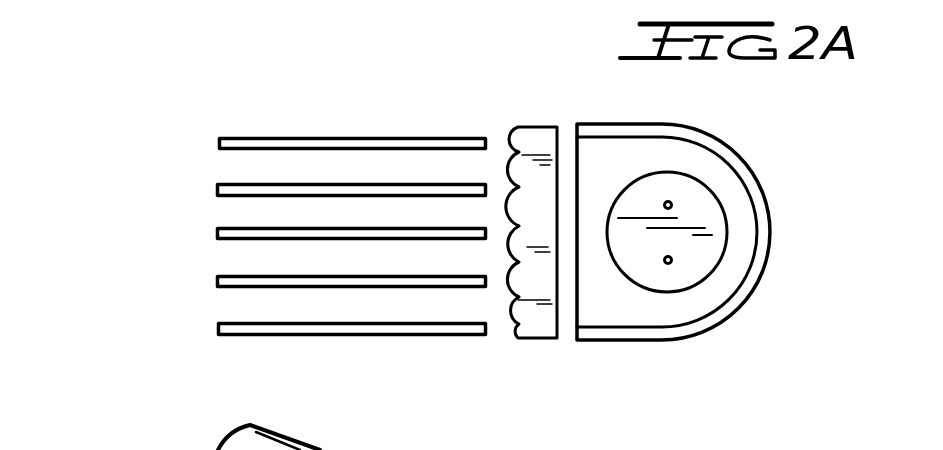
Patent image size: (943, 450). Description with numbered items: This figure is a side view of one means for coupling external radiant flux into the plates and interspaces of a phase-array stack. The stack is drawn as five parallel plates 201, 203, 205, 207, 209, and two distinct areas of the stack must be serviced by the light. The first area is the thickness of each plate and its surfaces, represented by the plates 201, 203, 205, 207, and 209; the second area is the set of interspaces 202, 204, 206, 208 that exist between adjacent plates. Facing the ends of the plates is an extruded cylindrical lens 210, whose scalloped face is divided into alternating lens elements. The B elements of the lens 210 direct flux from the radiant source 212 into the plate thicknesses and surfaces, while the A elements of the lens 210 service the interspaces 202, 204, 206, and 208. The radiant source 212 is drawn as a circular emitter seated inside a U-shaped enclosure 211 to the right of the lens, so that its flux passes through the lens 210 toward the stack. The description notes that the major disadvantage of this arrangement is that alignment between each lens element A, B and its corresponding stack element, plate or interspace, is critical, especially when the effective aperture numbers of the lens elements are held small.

The plate 201 is at (275, 137).
The interspace 202 is at (267, 157).
The plate 203 is at (241, 186).
The interspace 204 is at (247, 207).
The plate 205 is at (238, 233).
The interspace 206 is at (247, 250).
The plate 207 is at (230, 275).
The interspace 208 is at (243, 302).
The plate 209 is at (248, 338).
The extruded cylindrical lens 210 is at (545, 126).
The U-shaped housing 211 is at (759, 176).
The radiant source 212 is at (711, 256).
The A elements of lens A is at (513, 152).
The B elements of lens B is at (523, 127).